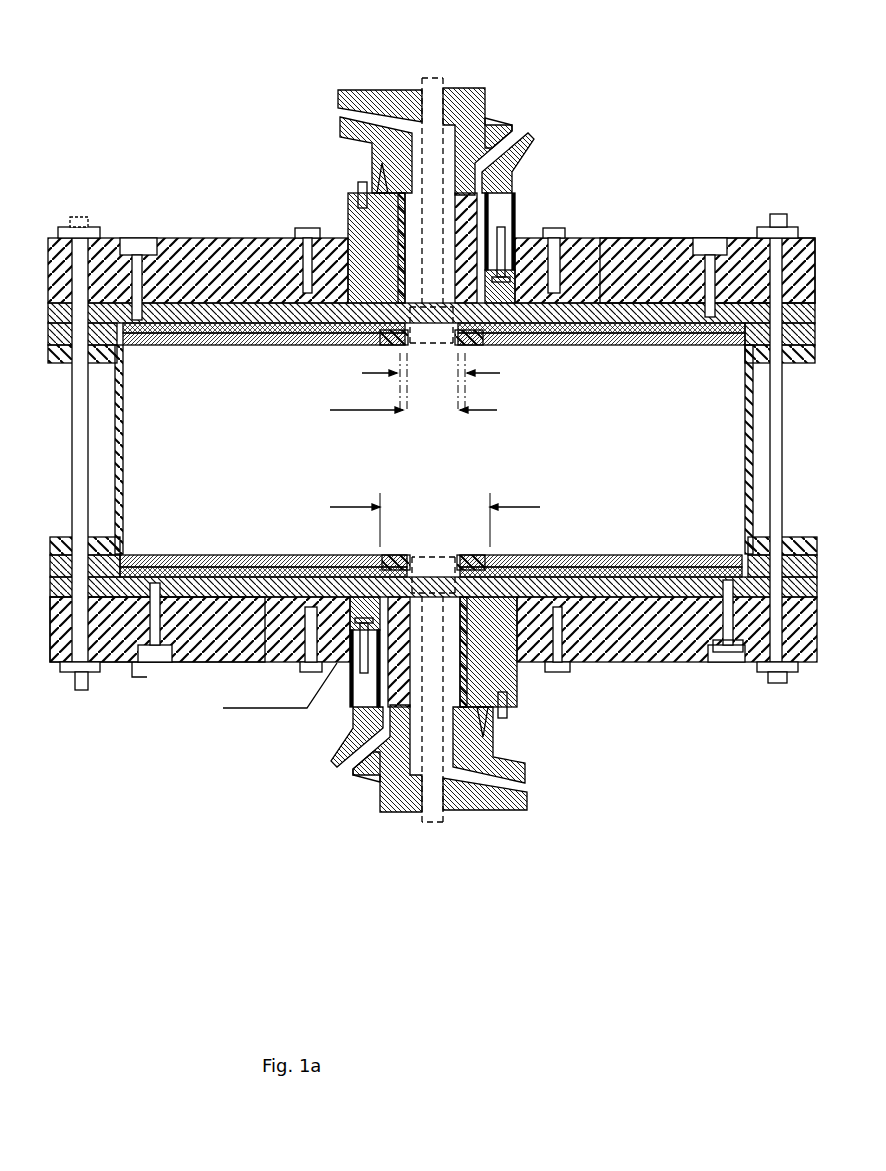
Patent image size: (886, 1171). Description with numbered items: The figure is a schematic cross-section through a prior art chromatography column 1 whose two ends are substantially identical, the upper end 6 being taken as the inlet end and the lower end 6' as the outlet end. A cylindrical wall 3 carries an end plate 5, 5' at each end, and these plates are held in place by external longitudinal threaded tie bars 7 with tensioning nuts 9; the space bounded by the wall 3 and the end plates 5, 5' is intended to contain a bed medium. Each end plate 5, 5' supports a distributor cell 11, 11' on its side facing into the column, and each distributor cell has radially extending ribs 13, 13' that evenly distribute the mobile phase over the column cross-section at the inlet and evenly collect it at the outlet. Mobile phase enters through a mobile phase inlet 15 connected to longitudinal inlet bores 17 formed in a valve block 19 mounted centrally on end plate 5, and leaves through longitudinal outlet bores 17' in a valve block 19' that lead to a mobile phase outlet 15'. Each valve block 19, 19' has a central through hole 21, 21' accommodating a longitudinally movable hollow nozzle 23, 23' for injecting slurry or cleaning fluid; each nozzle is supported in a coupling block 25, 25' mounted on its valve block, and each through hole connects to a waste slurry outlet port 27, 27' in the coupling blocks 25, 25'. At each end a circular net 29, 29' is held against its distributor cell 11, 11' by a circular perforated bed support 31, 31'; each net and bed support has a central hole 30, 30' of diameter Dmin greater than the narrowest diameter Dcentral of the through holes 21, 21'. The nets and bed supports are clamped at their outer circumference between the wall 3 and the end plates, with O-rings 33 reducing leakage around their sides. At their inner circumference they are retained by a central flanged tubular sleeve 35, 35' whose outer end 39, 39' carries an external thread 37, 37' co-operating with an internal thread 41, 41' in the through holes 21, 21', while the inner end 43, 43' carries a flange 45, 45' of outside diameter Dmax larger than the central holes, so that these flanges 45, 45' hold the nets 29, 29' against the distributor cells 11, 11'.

The chromatography column 1 is at (425, 566).
The cylindrical wall 3 is at (760, 662).
The end plate 5 is at (776, 424).
The end plate 5' is at (684, 694).
The upper end 6 is at (721, 234).
The lower end 6' is at (421, 689).
The threaded tie bar 7 is at (73, 680).
The tensioning nut 9 is at (80, 690).
The distributor cell 11 is at (431, 198).
The distributor cell 11' is at (433, 728).
The radially extending rib 13 is at (553, 243).
The radially extending rib 13' is at (562, 744).
The mobile phase inlet 15 is at (572, 118).
The mobile phase outlet 15' is at (326, 771).
The longitudinal inlet bore 17 is at (538, 232).
The longitudinal outlet bore 17' is at (326, 706).
The valve block 19 is at (319, 240).
The valve block 19' is at (630, 760).
The central through hole 21 is at (500, 120).
The central through hole 21' is at (323, 792).
The hollow nozzle 23 is at (335, 95).
The hollow nozzle 23' is at (602, 892).
The coupling block 25 is at (320, 156).
The coupling block 25' is at (371, 797).
The waste slurry outlet port 27 is at (298, 147).
The waste slurry outlet port 27' is at (605, 843).
The circular net 29 is at (593, 254).
The circular net 29' is at (534, 669).
The central hole 30 is at (434, 275).
The central hole 30' is at (431, 566).
The perforated bed support 31 is at (431, 247).
The perforated bed support 31' is at (433, 615).
The O-ring 33 is at (451, 212).
The flanged tubular sleeve 35 is at (308, 232).
The flanged tubular sleeve 35' is at (358, 675).
The external thread 37 is at (563, 159).
The external thread 37' is at (299, 744).
The outer end 39 is at (276, 172).
The outer end 39' is at (388, 832).
The internal thread 41 is at (663, 208).
The internal thread 41' is at (415, 772).
The inner end 43 is at (209, 380).
The inner end 43' is at (207, 527).
The flange 45 is at (646, 365).
The flange 45' is at (651, 539).